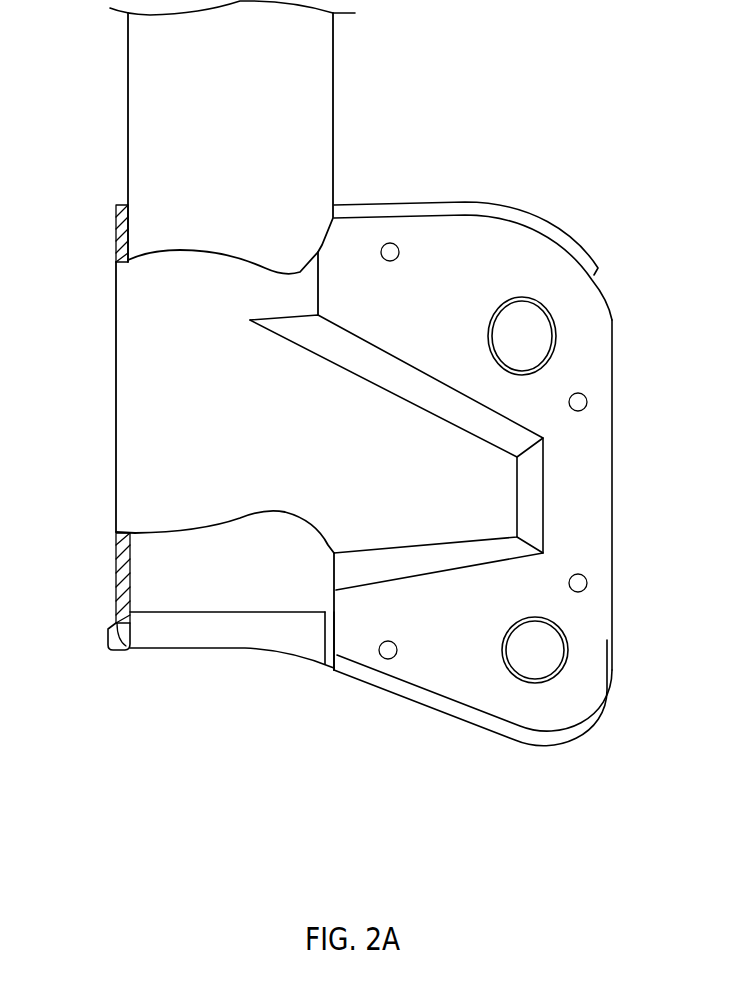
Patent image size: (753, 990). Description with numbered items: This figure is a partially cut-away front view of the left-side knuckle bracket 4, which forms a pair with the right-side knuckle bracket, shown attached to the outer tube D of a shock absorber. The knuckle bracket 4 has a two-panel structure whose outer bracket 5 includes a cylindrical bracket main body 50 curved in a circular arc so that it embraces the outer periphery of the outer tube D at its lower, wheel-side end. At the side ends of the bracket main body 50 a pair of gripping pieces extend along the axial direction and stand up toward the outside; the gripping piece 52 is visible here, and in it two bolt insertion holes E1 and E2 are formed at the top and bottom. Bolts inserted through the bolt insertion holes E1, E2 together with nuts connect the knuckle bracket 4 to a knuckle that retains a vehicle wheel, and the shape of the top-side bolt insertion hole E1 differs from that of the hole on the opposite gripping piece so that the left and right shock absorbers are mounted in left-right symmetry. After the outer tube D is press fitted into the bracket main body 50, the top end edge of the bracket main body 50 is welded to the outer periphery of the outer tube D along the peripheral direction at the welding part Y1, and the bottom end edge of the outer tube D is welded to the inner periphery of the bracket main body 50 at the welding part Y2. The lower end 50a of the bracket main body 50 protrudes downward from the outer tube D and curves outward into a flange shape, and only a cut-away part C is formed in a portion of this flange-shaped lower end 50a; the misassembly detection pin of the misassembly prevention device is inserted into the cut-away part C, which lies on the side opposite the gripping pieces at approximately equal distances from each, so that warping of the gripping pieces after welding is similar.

The outer tube D is at (140, 90).
The welding part Y1 is at (128, 205).
The bracket main body 50 is at (116, 372).
The welding part Y2 is at (130, 612).
The cut-away part C is at (113, 634).
The lower end 50a is at (228, 648).
The left-side knuckle bracket 4 is at (547, 203).
The outer bracket 5 is at (612, 358).
The gripping piece 52 is at (590, 485).
The bolt insertion hole E1 is at (505, 330).
The bolt insertion hole E2 is at (510, 650).